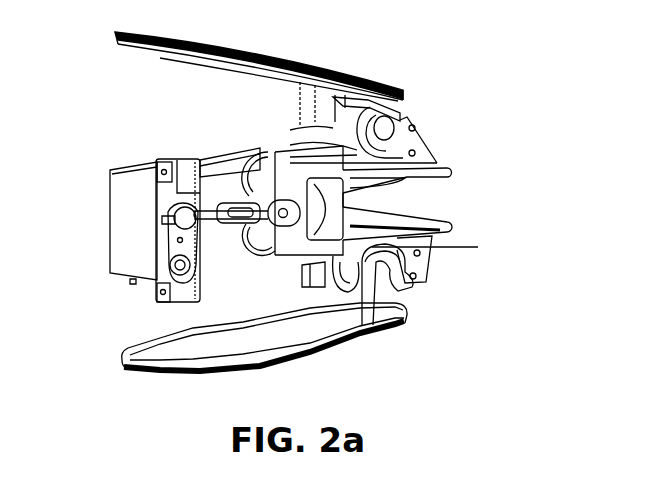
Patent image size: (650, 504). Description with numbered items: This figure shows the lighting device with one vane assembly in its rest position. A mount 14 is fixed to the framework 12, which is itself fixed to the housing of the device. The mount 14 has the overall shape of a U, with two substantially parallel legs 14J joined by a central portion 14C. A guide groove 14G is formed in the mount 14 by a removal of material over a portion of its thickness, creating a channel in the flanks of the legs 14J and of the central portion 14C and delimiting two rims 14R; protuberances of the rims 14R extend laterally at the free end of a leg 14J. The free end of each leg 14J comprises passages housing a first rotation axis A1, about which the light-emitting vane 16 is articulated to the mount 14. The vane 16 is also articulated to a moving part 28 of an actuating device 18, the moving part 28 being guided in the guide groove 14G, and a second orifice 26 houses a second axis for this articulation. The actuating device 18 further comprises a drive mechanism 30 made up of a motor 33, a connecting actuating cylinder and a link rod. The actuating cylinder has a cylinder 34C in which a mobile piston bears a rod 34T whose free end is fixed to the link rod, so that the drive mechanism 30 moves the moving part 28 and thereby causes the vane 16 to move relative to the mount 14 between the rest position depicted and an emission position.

The framework 12 is at (437, 170).
The mount 14 is at (449, 133).
The leg 14J is at (332, 172).
The central portion 14C is at (292, 248).
The rim 14R is at (249, 197).
The guide groove 14G is at (259, 249).
The vane 16 is at (288, 63).
The actuating device 18 is at (105, 280).
The second orifice 26 is at (415, 152).
The moving part 28 is at (290, 165).
The drive mechanism 30 is at (152, 298).
The motor 33 is at (137, 237).
The rod 34T is at (190, 208).
The cylinder 34C is at (232, 205).
The first rotation axis A1 is at (413, 125).